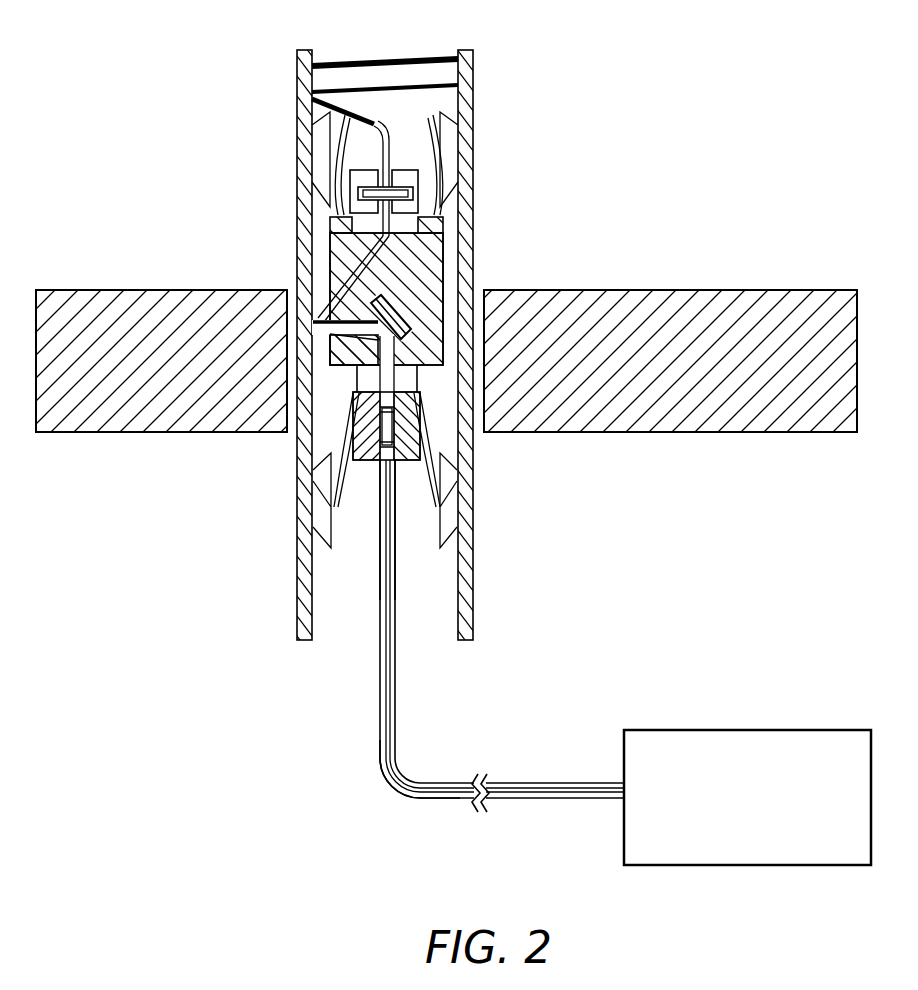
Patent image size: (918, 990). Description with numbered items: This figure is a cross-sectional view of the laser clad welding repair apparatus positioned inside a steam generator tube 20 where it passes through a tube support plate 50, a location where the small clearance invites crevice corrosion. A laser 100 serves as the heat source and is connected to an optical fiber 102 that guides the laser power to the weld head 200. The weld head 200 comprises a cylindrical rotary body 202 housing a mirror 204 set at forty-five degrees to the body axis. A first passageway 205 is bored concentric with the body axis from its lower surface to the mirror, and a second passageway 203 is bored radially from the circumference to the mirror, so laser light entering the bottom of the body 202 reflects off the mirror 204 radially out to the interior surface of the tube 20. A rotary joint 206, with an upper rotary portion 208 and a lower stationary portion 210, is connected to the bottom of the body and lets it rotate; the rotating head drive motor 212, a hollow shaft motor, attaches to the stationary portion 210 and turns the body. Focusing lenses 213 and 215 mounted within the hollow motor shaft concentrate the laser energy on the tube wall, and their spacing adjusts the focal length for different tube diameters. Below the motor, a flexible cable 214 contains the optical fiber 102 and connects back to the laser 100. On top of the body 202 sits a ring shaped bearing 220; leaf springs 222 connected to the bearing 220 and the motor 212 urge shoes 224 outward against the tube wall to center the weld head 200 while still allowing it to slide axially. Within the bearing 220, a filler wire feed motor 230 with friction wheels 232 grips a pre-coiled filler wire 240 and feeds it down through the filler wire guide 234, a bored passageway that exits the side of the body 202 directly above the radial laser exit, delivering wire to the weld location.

The steam generator tube 20 is at (297, 600).
The tube support plate 50 is at (660, 290).
The laser 100 is at (770, 728).
The optical fiber 102 is at (381, 727).
The weld head 200 is at (332, 222).
The cylindrical rotary body 202 is at (445, 254).
The second passageway 203 is at (330, 250).
The mirror 204 is at (408, 327).
The first passageway 205 is at (313, 320).
The rotary joint 206 is at (440, 396).
The upper rotary portion 208 is at (352, 395).
The lower stationary portion 210 is at (330, 455).
The rotating head drive motor 212 is at (418, 422).
The focusing lens 213 is at (415, 452).
The flexible cable 214 is at (416, 800).
The focusing lens 215 is at (394, 462).
The ring shaped bearing 220 is at (436, 222).
The leaf springs 222 is at (438, 185).
The shoes 224 is at (447, 125).
The filler wire feed motor 230 is at (330, 122).
The friction wheels 232 is at (340, 158).
The filler wire guide 234 is at (352, 190).
The filler wire 240 is at (390, 133).